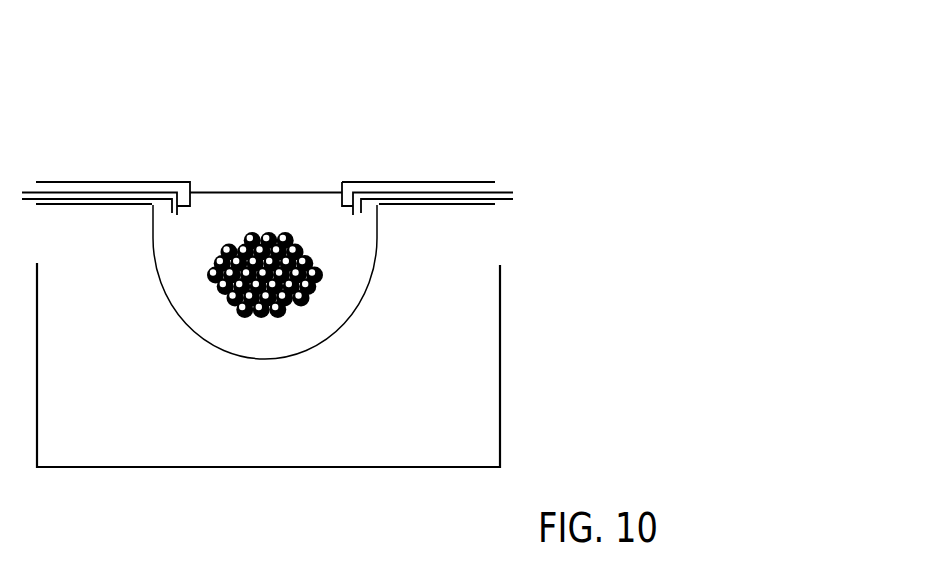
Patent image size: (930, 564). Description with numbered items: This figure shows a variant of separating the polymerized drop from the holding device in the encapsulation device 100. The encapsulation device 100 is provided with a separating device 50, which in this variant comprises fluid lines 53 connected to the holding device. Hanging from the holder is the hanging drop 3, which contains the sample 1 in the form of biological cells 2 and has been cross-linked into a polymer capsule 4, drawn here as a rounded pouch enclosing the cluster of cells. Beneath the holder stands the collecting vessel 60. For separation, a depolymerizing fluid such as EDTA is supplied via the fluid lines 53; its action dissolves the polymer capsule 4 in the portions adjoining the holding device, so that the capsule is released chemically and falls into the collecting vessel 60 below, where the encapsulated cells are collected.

The encapsulation device 100 is at (648, 112).
The separating device 50 is at (565, 160).
The fluid lines 53 is at (115, 192).
The hanging drop 3 is at (372, 287).
The polymer capsule 4 is at (265, 282).
The sample 1 is at (227, 282).
The biological cells 2 is at (265, 275).
The collecting vessel 60 is at (500, 365).